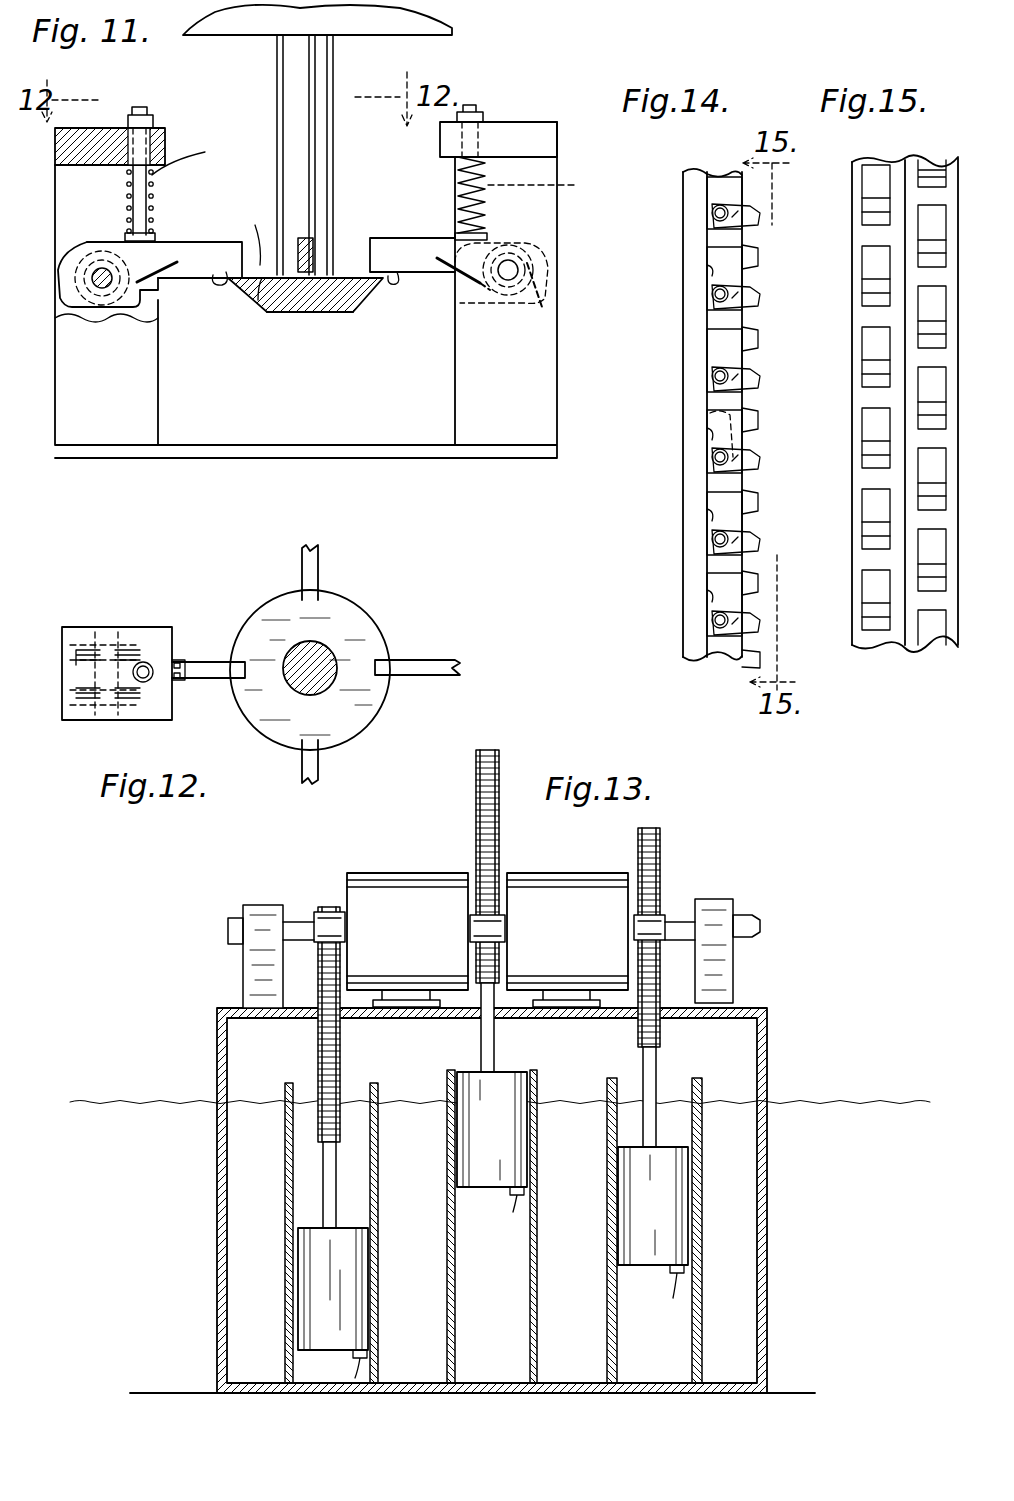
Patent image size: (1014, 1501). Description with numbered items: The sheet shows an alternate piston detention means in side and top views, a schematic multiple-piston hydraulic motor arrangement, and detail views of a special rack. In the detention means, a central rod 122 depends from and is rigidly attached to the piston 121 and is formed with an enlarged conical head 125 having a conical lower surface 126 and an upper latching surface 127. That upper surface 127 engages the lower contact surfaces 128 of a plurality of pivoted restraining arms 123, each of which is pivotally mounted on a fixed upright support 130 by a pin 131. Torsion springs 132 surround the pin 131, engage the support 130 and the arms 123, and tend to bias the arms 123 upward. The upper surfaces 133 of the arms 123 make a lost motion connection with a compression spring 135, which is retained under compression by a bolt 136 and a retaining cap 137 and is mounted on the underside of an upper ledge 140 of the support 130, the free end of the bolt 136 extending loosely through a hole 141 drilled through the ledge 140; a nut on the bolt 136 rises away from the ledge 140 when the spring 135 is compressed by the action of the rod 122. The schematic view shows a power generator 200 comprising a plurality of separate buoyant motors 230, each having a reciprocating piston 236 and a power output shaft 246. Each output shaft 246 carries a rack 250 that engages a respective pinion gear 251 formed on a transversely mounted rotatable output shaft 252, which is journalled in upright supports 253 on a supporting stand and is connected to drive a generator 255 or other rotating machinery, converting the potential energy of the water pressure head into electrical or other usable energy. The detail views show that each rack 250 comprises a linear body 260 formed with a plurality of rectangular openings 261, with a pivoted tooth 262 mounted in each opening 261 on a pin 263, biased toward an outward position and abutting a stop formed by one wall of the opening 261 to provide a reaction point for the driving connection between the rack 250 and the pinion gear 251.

In FIG. 11, the piston 121 is at (420, 22).
In FIG. 11, the central rod 122 is at (330, 62).
In FIG. 12, the central rod 122 is at (322, 645).
In FIG. 11, the pivoted restraining arms 123 is at (215, 280).
In FIG. 12, the pivoted restraining arms 123 is at (318, 555).
In FIG. 11, the enlarged conical head 125 is at (354, 314).
In FIG. 12, the enlarged conical head 125 is at (358, 700).
In FIG. 11, the conical lower surface 126 is at (248, 285).
In FIG. 11, the upper latching surface 127 is at (292, 312).
In FIG. 11, the lower contact surfaces 128 is at (383, 260).
In FIG. 11, the fixed upright support 130 is at (130, 412).
In FIG. 12, the fixed upright support 130 is at (68, 627).
In FIG. 11, the pin 131 is at (102, 288).
In FIG. 12, the pin 131 is at (112, 632).
In FIG. 11, the torsion springs 132 is at (110, 245).
In FIG. 12, the torsion springs 132 is at (90, 632).
In FIG. 11, the upper surfaces 133 is at (218, 242).
In FIG. 12, the upper surfaces 133 is at (218, 660).
In FIG. 11, the compression spring 135 is at (390, 159).
In FIG. 11, the bolt 136 is at (130, 184).
In FIG. 12, the bolt 136 is at (150, 660).
In FIG. 11, the retaining cap 137 is at (160, 236).
In FIG. 11, the upper ledge 140 is at (105, 128).
In FIG. 12, the upper ledge 140 is at (142, 628).
In FIG. 11, the hole 141 is at (150, 128).
In FIG. 13, the power generator 200 is at (693, 870).
In FIG. 13, the buoyant motors 230 is at (437, 1075).
In FIG. 13, the reciprocating piston 236 is at (514, 1139).
In FIG. 13, the power output shaft 246 is at (495, 1046).
In FIG. 14, the rack 250 is at (677, 428).
In FIG. 15, the rack 250 is at (863, 662).
In FIG. 13, the rack 250 is at (495, 830).
In FIG. 13, the pinion gears 251 is at (322, 920).
In FIG. 13, the rotatable output shaft 252 is at (748, 925).
In FIG. 13, the upright supports 253 is at (258, 977).
In FIG. 13, the generator 255 is at (428, 952).
In FIG. 14, the linear body 260 is at (690, 490).
In FIG. 14, the rectangular openings 261 is at (707, 268).
In FIG. 14, the pivoted tooth 262 is at (758, 290).
In FIG. 15, the pivoted tooth 262 is at (877, 372).
In FIG. 14, the pin 263 is at (712, 378).